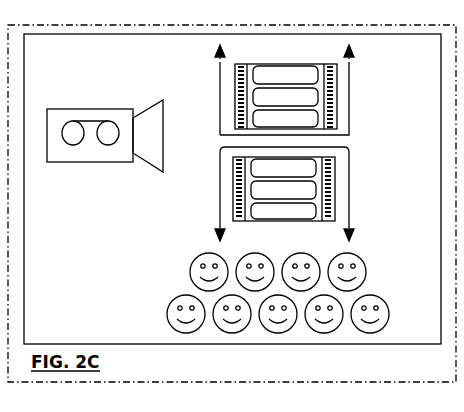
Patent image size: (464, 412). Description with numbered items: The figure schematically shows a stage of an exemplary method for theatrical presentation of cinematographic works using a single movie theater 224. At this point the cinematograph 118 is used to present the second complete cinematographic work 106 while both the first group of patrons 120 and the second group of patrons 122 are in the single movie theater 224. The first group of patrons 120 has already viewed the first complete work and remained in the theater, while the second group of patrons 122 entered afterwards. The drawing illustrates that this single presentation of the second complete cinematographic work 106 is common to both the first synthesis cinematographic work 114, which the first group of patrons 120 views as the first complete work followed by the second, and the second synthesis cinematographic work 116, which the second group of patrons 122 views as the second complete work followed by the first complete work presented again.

The single movie theater 224 is at (78, 69).
The cinematograph 118 is at (78, 162).
The first synthesis cinematographic work 114 is at (349, 110).
The second synthesis cinematographic work 116 is at (349, 200).
The second complete cinematographic work 106 is at (334, 85).
The first group of patrons 120 is at (162, 267).
The second group of patrons 122 is at (152, 311).